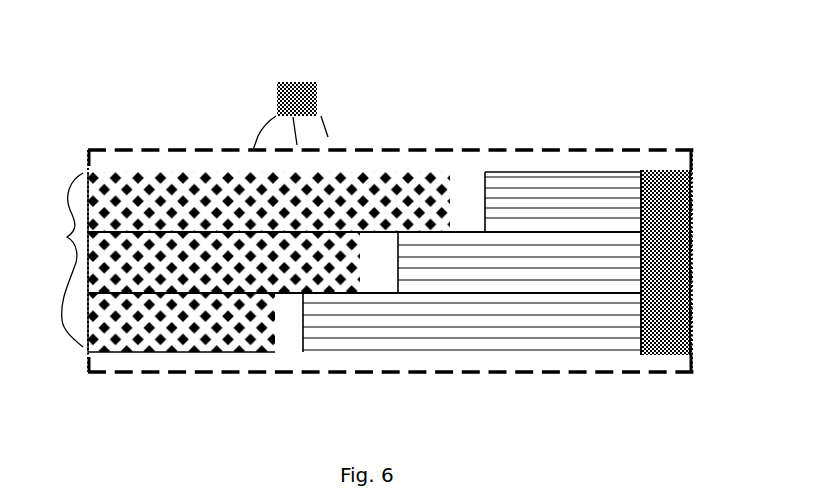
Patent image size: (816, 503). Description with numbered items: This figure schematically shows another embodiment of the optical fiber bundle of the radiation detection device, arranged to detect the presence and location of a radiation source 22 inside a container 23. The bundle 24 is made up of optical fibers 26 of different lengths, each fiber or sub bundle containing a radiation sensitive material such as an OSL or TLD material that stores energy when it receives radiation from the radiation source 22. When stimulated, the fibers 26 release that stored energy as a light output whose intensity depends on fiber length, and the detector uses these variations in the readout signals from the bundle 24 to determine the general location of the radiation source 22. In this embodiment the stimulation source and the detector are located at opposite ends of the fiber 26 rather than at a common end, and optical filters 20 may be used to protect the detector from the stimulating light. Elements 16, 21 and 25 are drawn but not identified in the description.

The absorbent layer 16 is at (135, 173).
The optical filters 20 is at (319, 88).
The lead wires 21 is at (333, 121).
The radiation source 22 is at (690, 254).
The container 23 is at (570, 152).
The bundle 24 is at (49, 260).
The bottom layer edge 25 is at (110, 354).
The optical fibers 26 is at (207, 347).